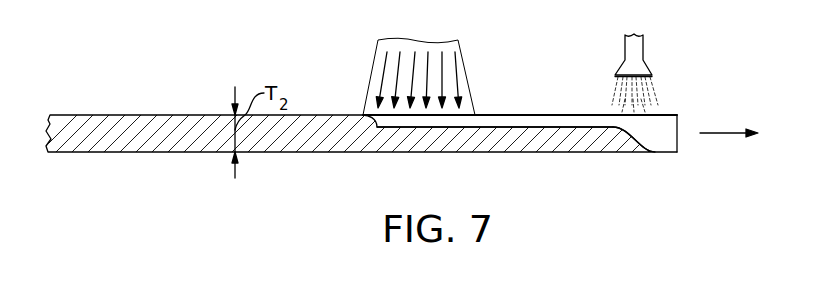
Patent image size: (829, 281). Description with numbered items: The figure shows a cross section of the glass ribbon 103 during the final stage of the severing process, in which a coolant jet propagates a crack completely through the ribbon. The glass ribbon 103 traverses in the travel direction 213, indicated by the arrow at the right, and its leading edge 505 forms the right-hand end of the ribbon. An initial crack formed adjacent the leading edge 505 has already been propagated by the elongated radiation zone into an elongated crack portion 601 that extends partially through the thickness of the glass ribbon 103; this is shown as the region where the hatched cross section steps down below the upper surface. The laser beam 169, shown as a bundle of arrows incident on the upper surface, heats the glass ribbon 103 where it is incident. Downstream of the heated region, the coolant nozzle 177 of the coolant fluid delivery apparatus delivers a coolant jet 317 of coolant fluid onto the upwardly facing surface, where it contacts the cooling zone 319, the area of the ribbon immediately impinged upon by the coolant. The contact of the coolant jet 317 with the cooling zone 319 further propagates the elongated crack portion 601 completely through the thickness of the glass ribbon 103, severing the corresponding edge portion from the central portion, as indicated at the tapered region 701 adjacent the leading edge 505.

The glass ribbon 103 is at (118, 152).
The elongated crack portion 601 is at (400, 128).
The severed portion 701 is at (663, 140).
The leading edge 505 is at (677, 137).
The travel direction 213 is at (722, 133).
The laser beam 169 is at (373, 63).
The coolant nozzle 177 is at (647, 68).
The coolant jet 317 is at (652, 88).
The cooling zone 319 is at (633, 113).